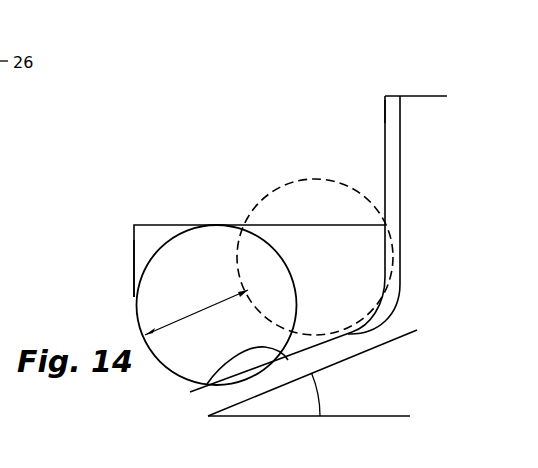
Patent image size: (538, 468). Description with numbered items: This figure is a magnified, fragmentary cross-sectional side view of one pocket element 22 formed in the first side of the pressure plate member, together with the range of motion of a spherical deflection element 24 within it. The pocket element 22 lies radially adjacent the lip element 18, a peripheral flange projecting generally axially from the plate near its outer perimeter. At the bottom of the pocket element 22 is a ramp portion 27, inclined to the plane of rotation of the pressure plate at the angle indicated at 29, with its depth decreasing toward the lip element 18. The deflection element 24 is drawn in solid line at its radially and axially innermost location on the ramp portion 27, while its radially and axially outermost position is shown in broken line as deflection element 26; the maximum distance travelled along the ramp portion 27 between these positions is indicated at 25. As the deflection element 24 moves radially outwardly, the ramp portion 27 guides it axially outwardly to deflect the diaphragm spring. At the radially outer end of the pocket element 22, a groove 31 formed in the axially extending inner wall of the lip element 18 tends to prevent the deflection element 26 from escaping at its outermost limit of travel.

The lip element 18 is at (427, 96).
The pocket element 22 is at (152, 237).
The deflection element 24 is at (146, 263).
The maximum travel distance 25 is at (218, 300).
The deflection element at radially and axially outermost position 26 is at (313, 178).
The ramp portion 27 is at (210, 384).
The ramp angle 29 is at (319, 390).
The groove 31 is at (395, 123).